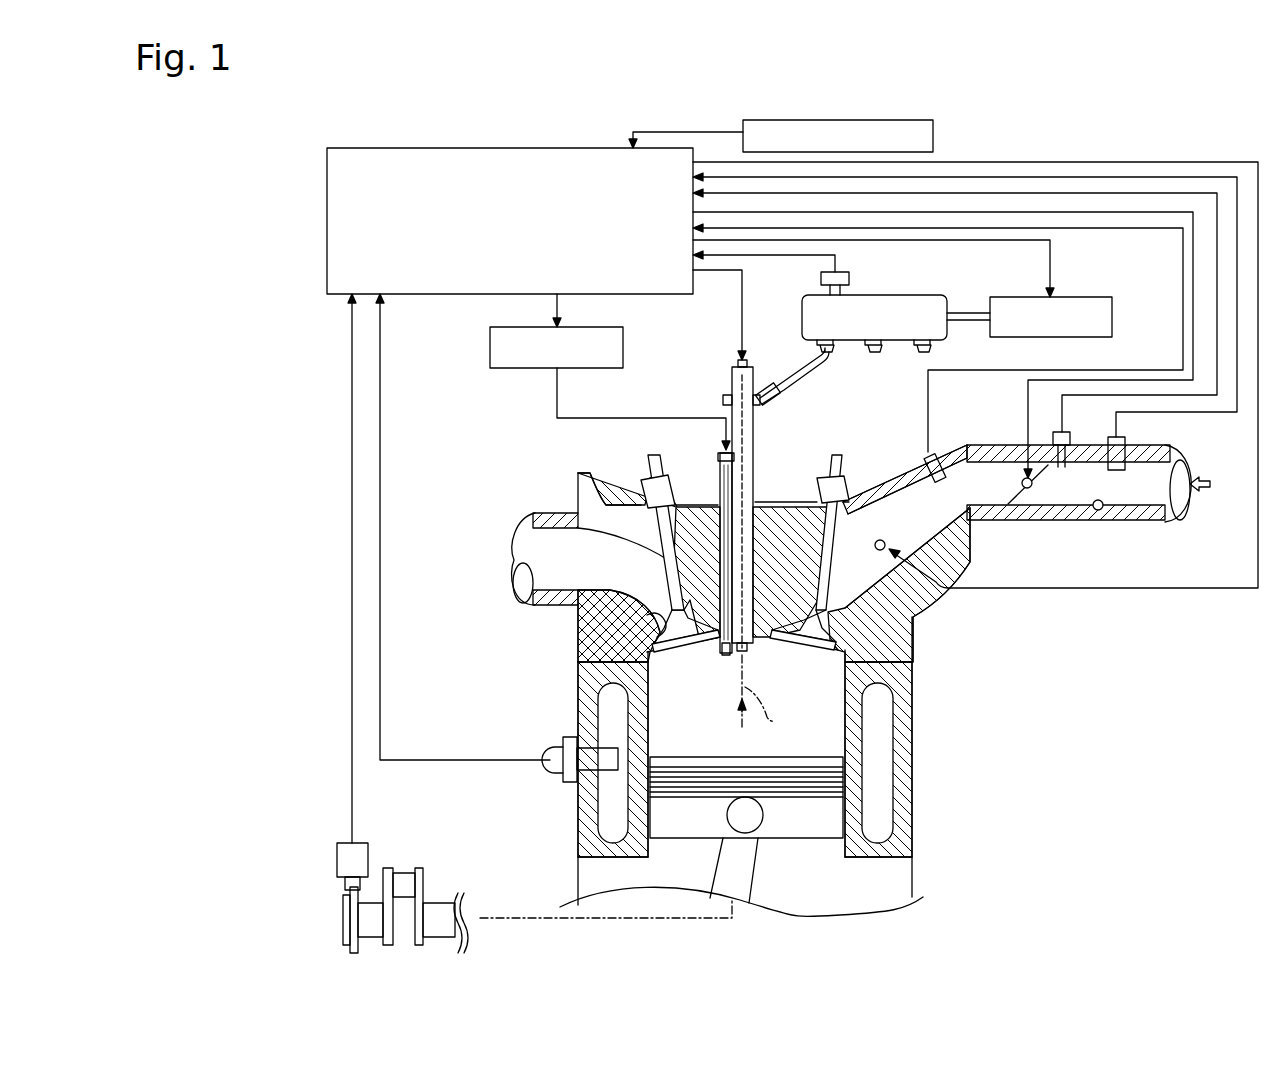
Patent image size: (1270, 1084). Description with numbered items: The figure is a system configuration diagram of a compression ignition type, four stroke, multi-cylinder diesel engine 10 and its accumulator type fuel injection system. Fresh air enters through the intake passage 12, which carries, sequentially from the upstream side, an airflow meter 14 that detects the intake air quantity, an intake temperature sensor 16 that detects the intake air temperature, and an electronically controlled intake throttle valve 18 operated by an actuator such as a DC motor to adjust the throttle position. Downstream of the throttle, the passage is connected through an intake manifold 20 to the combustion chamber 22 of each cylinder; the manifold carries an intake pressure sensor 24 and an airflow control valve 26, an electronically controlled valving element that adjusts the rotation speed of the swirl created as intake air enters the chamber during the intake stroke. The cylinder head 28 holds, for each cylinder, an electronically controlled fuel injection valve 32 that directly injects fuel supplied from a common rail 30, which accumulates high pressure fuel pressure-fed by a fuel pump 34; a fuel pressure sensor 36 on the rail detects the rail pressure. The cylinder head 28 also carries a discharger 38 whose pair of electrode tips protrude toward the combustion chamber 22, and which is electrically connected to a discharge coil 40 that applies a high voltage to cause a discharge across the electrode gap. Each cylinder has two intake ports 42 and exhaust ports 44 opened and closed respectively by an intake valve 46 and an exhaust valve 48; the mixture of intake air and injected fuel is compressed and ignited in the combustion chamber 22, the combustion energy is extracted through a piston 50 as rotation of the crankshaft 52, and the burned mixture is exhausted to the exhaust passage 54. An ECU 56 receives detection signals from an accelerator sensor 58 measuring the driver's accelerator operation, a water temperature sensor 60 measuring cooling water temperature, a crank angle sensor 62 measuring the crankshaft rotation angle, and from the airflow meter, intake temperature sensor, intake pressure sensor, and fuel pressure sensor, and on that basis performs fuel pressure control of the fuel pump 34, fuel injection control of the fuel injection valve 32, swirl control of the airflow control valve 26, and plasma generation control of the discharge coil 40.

The engine 10 is at (940, 872).
The intake passage 12 is at (1096, 511).
The airflow meter 14 is at (1124, 432).
The intake temperature sensor 16 is at (1052, 432).
The intake throttle valve 18 is at (1013, 485).
The intake manifold 20 is at (913, 628).
The combustion chamber 22 is at (827, 717).
The intake pressure sensor 24 is at (933, 453).
The airflow control valve 26 is at (888, 533).
The cylinder head 28 is at (623, 517).
The common rail 30 is at (908, 295).
The fuel injection valve 32 is at (757, 421).
The fuel pump 34 is at (1093, 297).
The fuel pressure sensor 36 is at (820, 279).
The discharger 38 is at (719, 461).
The discharge coil 40 is at (625, 352).
The intake port 42 is at (912, 656).
The exhaust port 44 is at (590, 645).
The intake valve 46 is at (851, 453).
The exhaust valve 48 is at (645, 462).
The piston 50 is at (797, 840).
The crankshaft 52 is at (440, 895).
The exhaust passage 54 is at (555, 513).
The ECU 56 is at (326, 220).
The accelerator sensor 58 is at (935, 138).
The water temperature sensor 60 is at (553, 745).
The crank angle sensor 62 is at (362, 842).